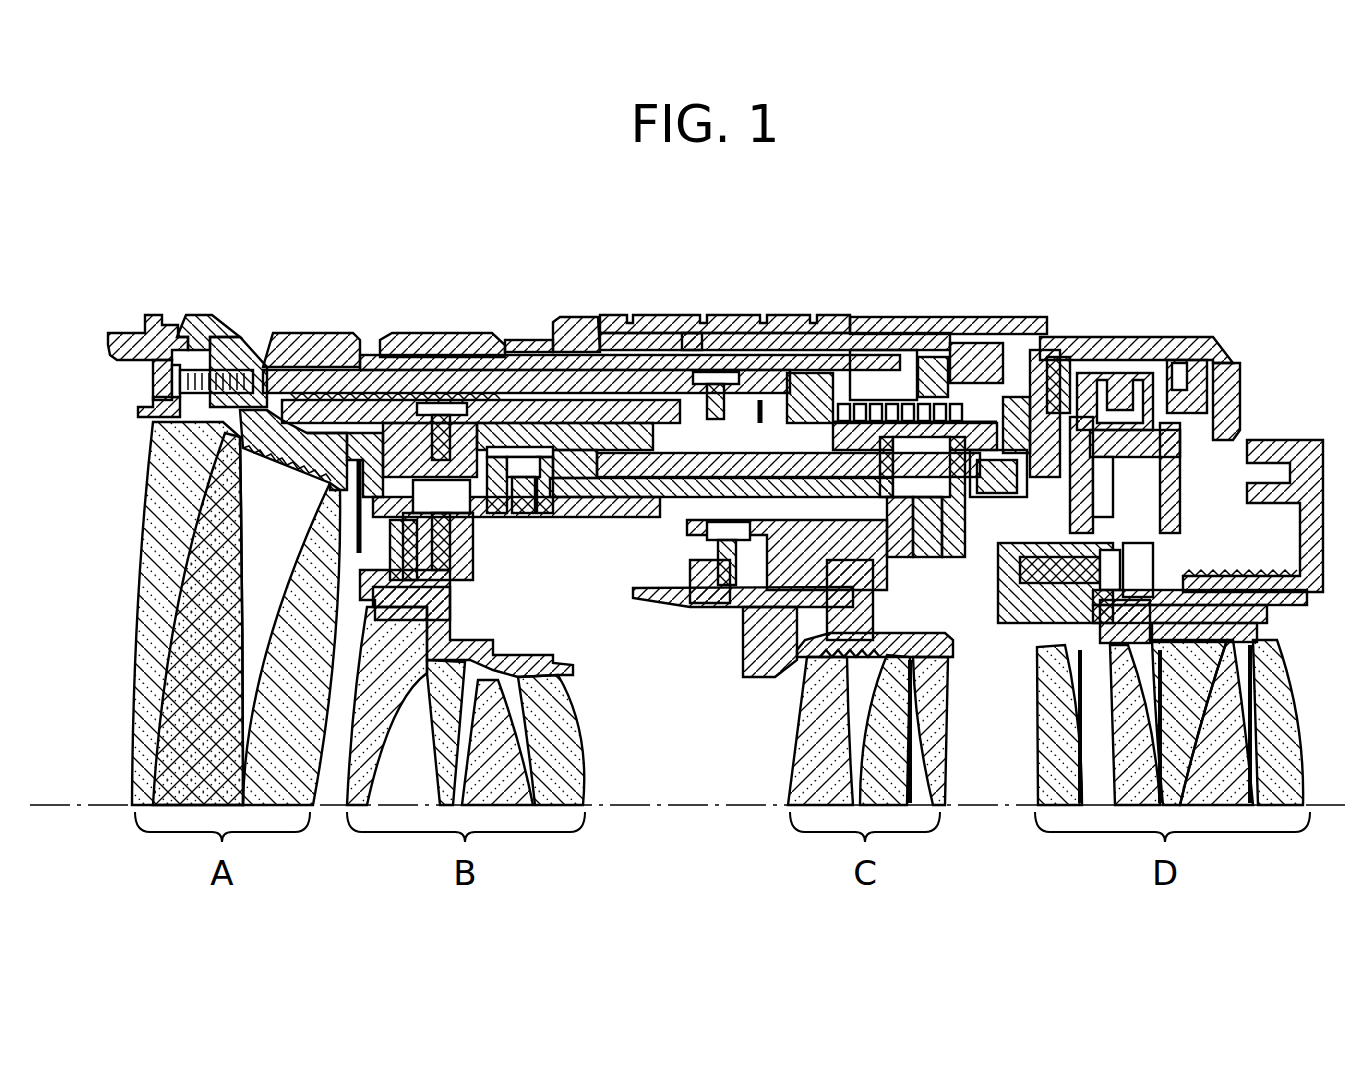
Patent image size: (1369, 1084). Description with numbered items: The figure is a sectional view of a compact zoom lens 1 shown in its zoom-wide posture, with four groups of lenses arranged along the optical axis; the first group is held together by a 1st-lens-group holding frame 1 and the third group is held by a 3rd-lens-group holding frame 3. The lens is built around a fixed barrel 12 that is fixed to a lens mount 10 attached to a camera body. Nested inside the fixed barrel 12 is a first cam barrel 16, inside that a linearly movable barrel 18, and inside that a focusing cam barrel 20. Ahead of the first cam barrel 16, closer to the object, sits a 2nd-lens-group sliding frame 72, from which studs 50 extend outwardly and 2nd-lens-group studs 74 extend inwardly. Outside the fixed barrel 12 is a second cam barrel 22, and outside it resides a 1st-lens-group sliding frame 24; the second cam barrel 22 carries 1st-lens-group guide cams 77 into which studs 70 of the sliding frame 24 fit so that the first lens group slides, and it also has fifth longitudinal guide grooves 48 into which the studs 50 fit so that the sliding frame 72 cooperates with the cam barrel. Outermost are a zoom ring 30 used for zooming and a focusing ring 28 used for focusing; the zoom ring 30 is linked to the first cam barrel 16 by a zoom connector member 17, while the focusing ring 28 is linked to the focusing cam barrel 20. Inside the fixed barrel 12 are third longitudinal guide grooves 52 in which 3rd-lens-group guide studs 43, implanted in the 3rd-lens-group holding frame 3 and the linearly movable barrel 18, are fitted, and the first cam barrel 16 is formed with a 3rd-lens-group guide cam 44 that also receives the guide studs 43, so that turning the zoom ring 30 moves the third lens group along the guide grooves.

The 1st-lens-group holding frame 1 is at (213, 340).
The 3rd-lens-group holding frame 3 is at (1035, 385).
The lens mount 10 is at (1285, 470).
The fixed barrel 12 is at (765, 378).
The first cam barrel 16 is at (930, 385).
The zoom connector member 17 is at (1153, 340).
The linearly movable barrel 18 is at (870, 385).
The focusing cam barrel 20 is at (620, 398).
The second cam barrel 22 is at (295, 332).
The 1st-lens-group sliding frame 24 is at (365, 342).
The focusing ring 28 is at (642, 368).
The zoom ring 30 is at (893, 385).
The 3rd-lens-group guide studs 43 is at (1072, 365).
The 3rd-lens-group guide cam 44 is at (1013, 385).
The fifth longitudinal guide grooves 48 is at (462, 360).
The studs 50 is at (408, 342).
The third longitudinal guide grooves 52 is at (810, 385).
The studs 70 is at (738, 378).
The 2nd-lens-group sliding frame 72 is at (516, 345).
The 2nd-lens-group studs 74 is at (566, 350).
The 1st-lens-group guide cams 77 is at (687, 330).